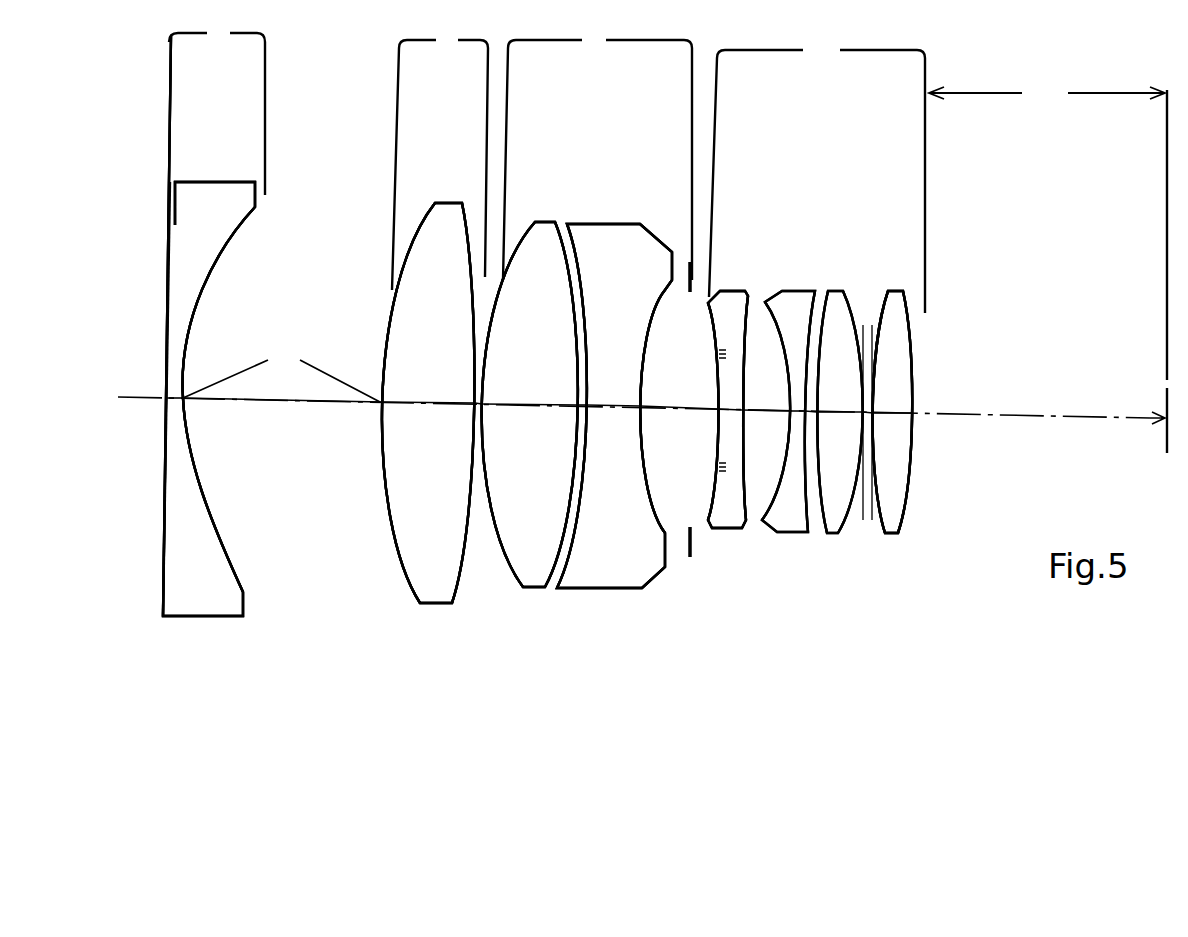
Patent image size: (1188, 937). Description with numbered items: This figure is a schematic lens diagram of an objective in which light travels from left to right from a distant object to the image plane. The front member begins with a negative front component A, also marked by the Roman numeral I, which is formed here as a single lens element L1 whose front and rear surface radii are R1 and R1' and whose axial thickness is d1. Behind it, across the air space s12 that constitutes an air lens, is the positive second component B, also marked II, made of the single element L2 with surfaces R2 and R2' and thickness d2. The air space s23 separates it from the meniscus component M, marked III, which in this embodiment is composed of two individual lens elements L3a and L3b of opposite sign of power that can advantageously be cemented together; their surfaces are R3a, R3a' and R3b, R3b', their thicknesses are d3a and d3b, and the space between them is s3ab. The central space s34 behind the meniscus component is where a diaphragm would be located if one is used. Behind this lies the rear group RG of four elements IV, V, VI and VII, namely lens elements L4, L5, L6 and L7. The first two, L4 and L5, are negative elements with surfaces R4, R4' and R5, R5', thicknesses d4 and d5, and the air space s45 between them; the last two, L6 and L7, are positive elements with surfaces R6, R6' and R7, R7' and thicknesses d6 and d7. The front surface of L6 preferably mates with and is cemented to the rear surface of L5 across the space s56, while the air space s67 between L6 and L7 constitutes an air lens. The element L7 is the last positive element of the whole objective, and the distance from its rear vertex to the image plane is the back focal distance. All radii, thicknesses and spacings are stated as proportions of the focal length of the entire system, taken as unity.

The front component A is at (214, 318).
The second component B is at (435, 315).
The meniscus component M is at (587, 307).
The rear group RG is at (816, 285).
The first component I is at (196, 682).
The second component II is at (437, 683).
The third component III is at (647, 658).
The fourth element IV is at (733, 636).
The fifth element V is at (797, 636).
The sixth element VI is at (848, 636).
The seventh element VII is at (928, 640).
The first lens element L1 is at (198, 588).
The second lens element L2 is at (437, 584).
The front element of the meniscus component L3a is at (538, 575).
The rear element of the meniscus component L3b is at (627, 575).
The fourth lens element L4 is at (733, 510).
The fifth lens element L5 is at (797, 513).
The sixth lens element L6 is at (833, 527).
The seventh lens element L7 is at (895, 530).
The front surface radius of first element R1 is at (139, 383).
The rear surface radius of first element R1' is at (241, 369).
The front surface radius of second element R2 is at (408, 374).
The rear surface radius of second element R2' is at (456, 373).
The front surface radius of element L3a R3a is at (513, 366).
The rear surface radius of element L3a R3a' is at (576, 365).
The front surface radius of element L3b R3b is at (603, 353).
The rear surface radius of element L3b R3b' is at (657, 348).
The front surface radius of fourth element R4 is at (728, 372).
The rear surface radius of fourth element R4' is at (746, 336).
The front surface radius of fifth element R5 is at (780, 364).
The rear surface radius of fifth element R5' is at (809, 386).
The front surface radius of sixth element R6 is at (809, 340).
The rear surface radius of sixth element R6' is at (855, 367).
The front surface radius of seventh element R7 is at (877, 338).
The rear surface radius of seventh element R7' is at (907, 371).
The axial thickness of first element d1 is at (173, 404).
The axial thickness of second element d2 is at (428, 407).
The axial thickness of element L3a d3a is at (530, 409).
The axial thickness of element L3b d3b is at (613, 412).
The axial thickness of fourth element d4 is at (730, 419).
The axial thickness of fifth element d5 is at (798, 406).
The axial thickness of sixth element d6 is at (840, 415).
The axial thickness of seventh element d7 is at (892, 415).
The space between first and second elements s12 is at (282, 405).
The space between second and third components s23 is at (474, 412).
The space between elements L3a and L3b s3ab is at (578, 418).
The central space s34 is at (679, 413).
The space between fourth and fifth elements s45 is at (767, 415).
The space between fifth and sixth elements s56 is at (808, 422).
The space between sixth and seventh elements s67 is at (859, 485).